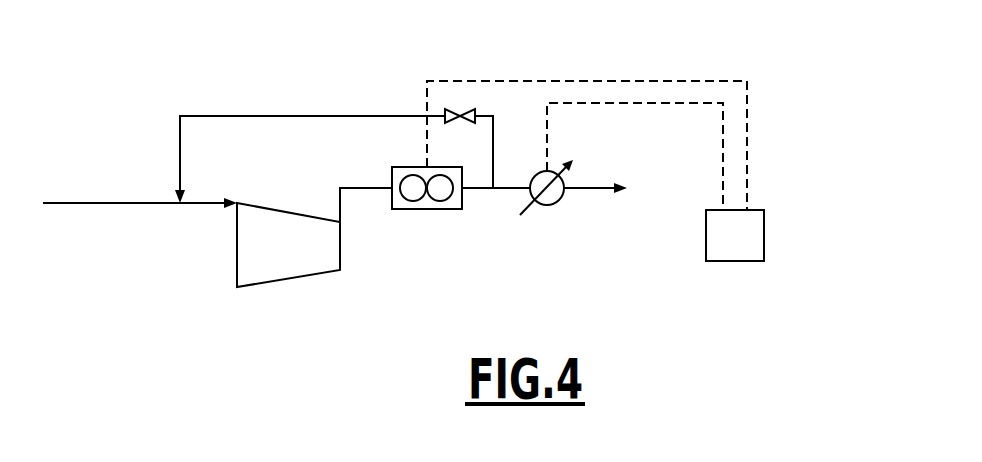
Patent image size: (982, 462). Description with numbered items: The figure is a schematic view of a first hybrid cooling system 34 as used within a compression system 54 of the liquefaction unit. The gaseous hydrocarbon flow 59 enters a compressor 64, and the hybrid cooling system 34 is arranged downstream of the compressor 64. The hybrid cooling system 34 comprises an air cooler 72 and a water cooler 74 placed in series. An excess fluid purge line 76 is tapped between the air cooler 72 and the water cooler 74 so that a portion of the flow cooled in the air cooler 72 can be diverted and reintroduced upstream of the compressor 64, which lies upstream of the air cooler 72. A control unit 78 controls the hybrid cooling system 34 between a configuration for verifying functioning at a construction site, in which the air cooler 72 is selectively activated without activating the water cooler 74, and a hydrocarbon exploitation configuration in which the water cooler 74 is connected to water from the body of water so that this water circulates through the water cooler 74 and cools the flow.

The hybrid cooling system 34 is at (550, 40).
The compression system 54 is at (782, 173).
The gaseous hydrocarbon flow 59 is at (82, 203).
The compressor 64 is at (237, 252).
The air cooler 72 is at (445, 209).
The water cooler 74 is at (553, 200).
The excess fluid purge line 76 is at (330, 116).
The control unit 78 is at (706, 226).